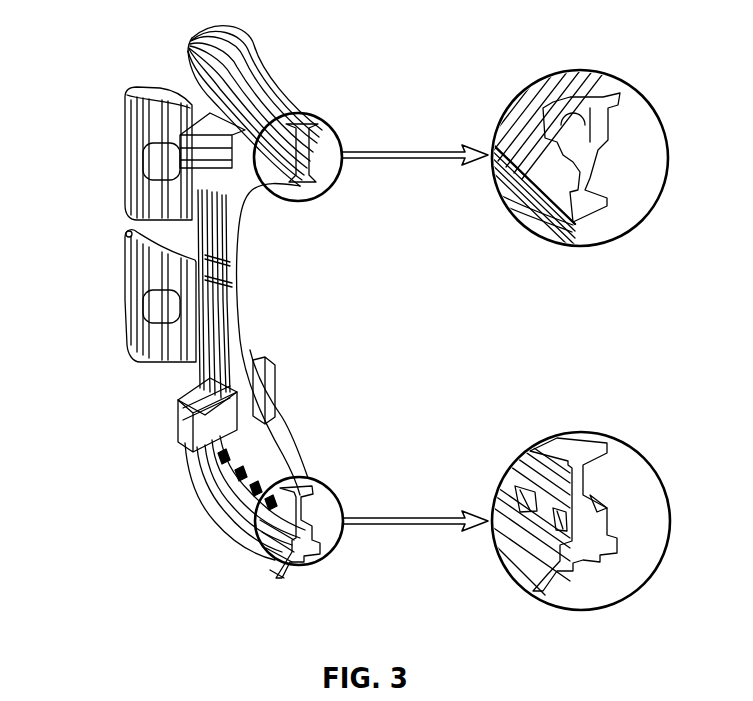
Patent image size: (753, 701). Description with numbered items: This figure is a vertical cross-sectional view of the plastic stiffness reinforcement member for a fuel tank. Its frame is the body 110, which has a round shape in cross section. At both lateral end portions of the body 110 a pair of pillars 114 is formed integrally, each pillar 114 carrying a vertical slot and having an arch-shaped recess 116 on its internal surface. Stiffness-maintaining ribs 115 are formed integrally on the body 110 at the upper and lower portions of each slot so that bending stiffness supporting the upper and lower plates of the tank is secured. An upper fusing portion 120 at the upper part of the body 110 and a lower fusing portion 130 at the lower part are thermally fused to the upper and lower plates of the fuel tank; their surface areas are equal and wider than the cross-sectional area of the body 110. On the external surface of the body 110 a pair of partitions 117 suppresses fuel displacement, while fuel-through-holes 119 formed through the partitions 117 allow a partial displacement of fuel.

The body 110 is at (598, 215).
The pillar 114 is at (243, 292).
The stiffness-maintaining rib 115 is at (190, 397).
The arch-shaped recess 116 is at (234, 230).
The partition 117 is at (130, 200).
The fuel-through-hole 119 is at (158, 157).
The upper fusing portion 120 is at (612, 76).
The lower fusing portion 130 is at (584, 578).